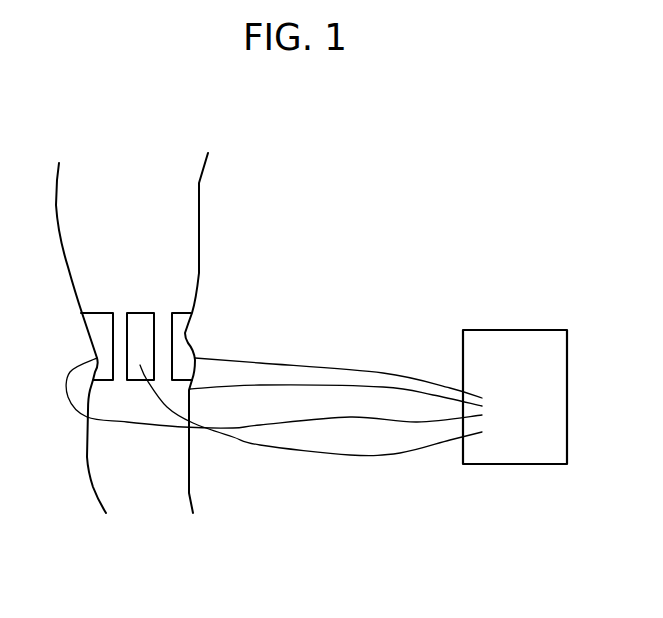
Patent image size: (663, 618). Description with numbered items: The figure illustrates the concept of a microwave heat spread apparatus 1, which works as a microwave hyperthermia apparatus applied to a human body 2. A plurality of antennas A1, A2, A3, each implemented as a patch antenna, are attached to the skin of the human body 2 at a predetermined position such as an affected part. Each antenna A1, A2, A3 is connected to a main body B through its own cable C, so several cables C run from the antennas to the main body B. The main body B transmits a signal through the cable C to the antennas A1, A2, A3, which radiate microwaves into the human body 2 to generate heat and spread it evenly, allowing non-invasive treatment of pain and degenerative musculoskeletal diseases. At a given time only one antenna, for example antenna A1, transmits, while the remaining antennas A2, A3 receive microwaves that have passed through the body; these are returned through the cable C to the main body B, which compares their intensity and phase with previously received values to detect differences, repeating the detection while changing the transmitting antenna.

The microwave heat spread apparatus 1 is at (490, 269).
The human body 2 is at (180, 197).
The antenna A1 is at (97, 328).
The antenna A2 is at (138, 318).
The antenna A3 is at (178, 323).
The main body B is at (516, 465).
The cable C is at (343, 457).